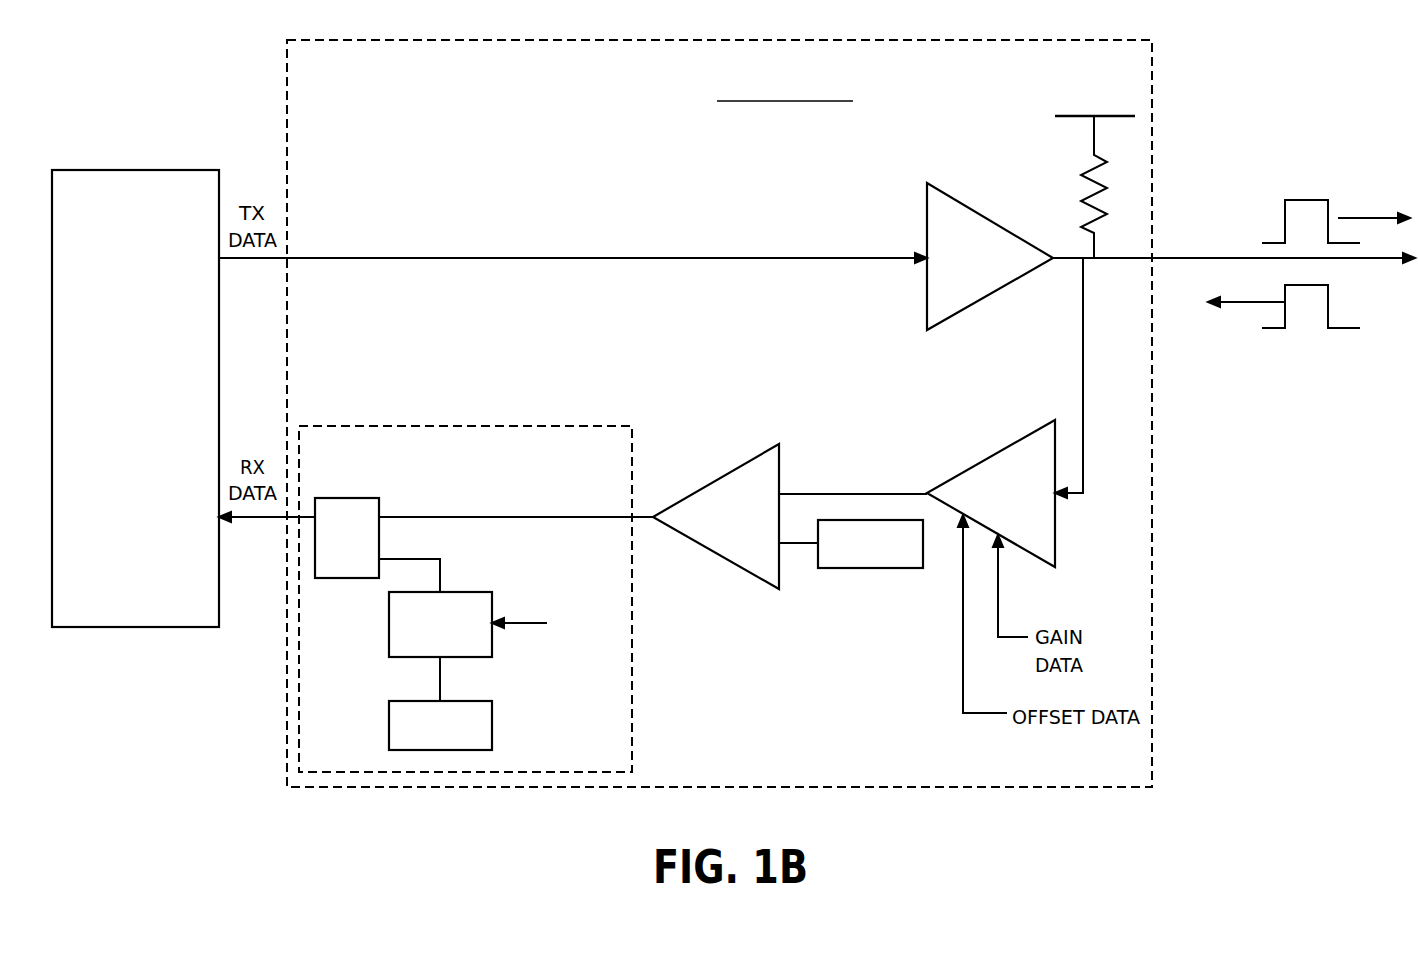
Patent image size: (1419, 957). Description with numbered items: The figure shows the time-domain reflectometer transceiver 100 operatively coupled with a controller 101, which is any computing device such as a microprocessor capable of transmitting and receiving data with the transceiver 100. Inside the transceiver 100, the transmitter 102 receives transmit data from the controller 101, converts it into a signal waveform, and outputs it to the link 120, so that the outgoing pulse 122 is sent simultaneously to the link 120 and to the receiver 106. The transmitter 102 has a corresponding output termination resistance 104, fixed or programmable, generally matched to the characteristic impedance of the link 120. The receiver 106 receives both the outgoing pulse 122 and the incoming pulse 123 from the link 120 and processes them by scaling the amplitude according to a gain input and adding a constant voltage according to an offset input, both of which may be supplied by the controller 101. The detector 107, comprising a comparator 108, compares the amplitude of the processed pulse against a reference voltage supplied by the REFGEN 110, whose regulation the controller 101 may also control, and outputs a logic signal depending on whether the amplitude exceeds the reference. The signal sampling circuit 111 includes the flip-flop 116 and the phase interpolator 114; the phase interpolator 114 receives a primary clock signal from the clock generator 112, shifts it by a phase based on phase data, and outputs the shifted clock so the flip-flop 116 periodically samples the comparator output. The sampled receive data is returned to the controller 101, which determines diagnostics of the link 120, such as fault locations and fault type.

The time-domain reflectometer system 100 is at (276, 108).
The controller 101 is at (129, 170).
The transmitter 102 is at (927, 208).
The output termination resistance 104 is at (1078, 177).
The receiver 106 is at (1003, 448).
The detector 107 is at (790, 505).
The comparator 108 is at (733, 467).
The REFGEN 110 is at (880, 568).
The signal sampling circuit 111 is at (524, 414).
The clock generator 112 is at (492, 728).
The phase interpolator 114 is at (389, 619).
The flip-flop 116 is at (340, 498).
The link 120 is at (1160, 262).
The pulse 122 is at (1305, 200).
The pulse 123 is at (1328, 302).